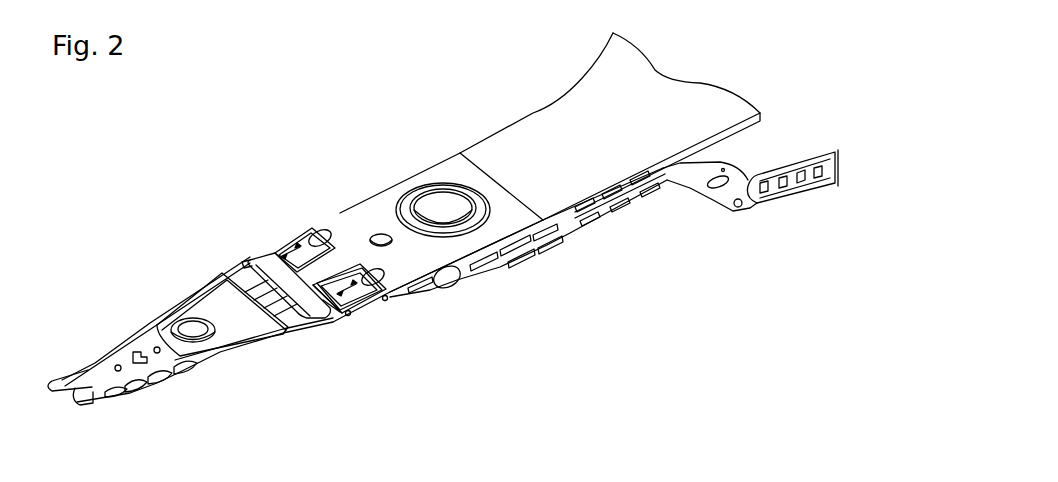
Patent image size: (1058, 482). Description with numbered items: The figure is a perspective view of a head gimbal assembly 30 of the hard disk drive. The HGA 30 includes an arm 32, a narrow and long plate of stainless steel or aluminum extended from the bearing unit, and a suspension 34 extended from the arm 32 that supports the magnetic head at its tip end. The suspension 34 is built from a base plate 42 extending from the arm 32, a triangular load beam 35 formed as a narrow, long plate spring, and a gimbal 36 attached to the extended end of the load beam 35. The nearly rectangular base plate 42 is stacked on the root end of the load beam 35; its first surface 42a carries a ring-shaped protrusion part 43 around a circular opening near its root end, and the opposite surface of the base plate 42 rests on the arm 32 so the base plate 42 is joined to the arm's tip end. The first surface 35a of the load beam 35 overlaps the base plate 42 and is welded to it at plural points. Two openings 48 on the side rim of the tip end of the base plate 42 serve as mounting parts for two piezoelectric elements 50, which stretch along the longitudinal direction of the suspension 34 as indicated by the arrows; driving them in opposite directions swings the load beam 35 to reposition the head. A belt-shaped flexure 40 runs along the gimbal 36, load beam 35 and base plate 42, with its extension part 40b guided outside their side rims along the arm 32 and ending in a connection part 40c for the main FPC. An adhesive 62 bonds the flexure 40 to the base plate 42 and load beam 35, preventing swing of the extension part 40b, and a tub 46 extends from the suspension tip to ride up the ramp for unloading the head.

The head gimbal assembly 30 is at (441, 120).
The arm 32 is at (580, 105).
The suspension 34 is at (387, 337).
The load beam 35 is at (165, 307).
The first surface of the load beam 35a is at (150, 340).
The gimbal 36 is at (97, 403).
The flexure 40 is at (511, 270).
The extension part of the flexure 40b is at (577, 238).
The connection part of the flexure 40c is at (783, 200).
The base plate 42 is at (341, 225).
The first surface of the base plate 42a is at (367, 210).
The protrusion part 43 is at (407, 200).
The tub 46 is at (53, 378).
The opening 48 is at (268, 257).
The piezoelectric element 50 is at (287, 250).
The adhesive 62 is at (447, 287).